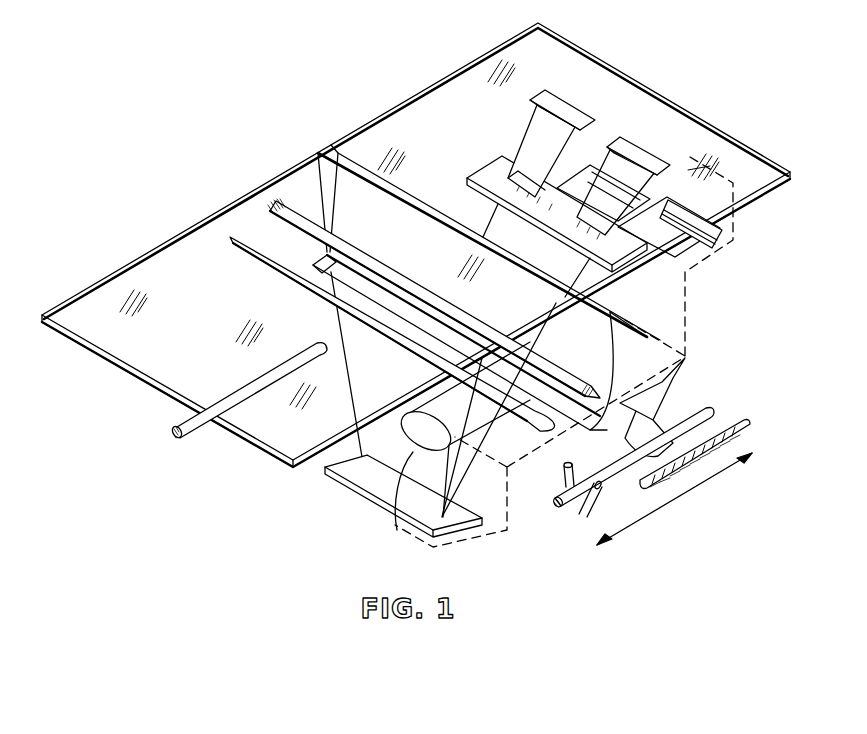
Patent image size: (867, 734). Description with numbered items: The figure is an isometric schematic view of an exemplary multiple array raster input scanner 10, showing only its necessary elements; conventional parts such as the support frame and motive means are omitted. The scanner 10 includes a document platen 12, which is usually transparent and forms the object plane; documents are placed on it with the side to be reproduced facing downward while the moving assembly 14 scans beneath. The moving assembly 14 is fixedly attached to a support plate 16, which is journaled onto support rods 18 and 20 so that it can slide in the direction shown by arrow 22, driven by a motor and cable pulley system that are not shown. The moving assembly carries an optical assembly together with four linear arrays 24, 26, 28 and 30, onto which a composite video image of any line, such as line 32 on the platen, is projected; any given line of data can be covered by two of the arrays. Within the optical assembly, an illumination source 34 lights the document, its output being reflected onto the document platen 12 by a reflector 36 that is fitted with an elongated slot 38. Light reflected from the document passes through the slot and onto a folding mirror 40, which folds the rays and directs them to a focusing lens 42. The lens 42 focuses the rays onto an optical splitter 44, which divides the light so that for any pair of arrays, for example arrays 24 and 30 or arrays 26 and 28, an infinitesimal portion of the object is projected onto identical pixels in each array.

The raster input scanner 10 is at (687, 303).
The document platen 12 is at (483, 90).
The moving assembly 14 is at (733, 235).
The support plate 16 is at (672, 389).
The support rod 18 is at (558, 502).
The support rod 20 is at (185, 438).
The arrow 22 is at (677, 496).
The linear array 24 is at (680, 212).
The linear array 26 is at (582, 180).
The linear array 28 is at (620, 142).
The linear array 30 is at (558, 102).
The line 32 is at (318, 153).
The illumination source 34 is at (489, 246).
The reflector 36 is at (610, 312).
The elongated slot 38 is at (306, 262).
The folding mirror 40 is at (388, 488).
The focusing lens 42 is at (397, 516).
The optical splitter 44 is at (498, 178).